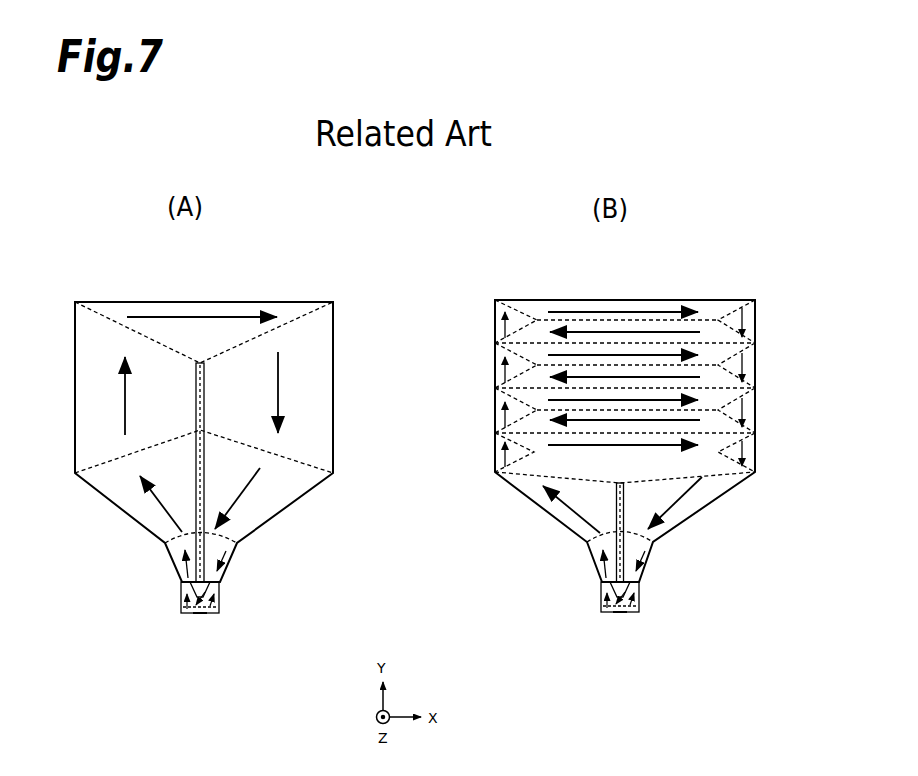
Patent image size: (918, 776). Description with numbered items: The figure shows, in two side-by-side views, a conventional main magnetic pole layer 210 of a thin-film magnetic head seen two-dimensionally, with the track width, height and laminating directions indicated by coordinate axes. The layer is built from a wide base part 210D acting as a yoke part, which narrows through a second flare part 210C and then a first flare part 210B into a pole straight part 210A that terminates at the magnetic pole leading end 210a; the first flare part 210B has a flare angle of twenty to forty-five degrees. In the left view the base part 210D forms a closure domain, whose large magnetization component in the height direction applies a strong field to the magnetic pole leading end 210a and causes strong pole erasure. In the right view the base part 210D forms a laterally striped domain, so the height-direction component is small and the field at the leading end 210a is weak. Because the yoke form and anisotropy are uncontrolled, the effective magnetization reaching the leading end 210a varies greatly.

The main magnetic pole layer 210 is at (242, 288).
The base part 210D is at (318, 343).
The second flare part 210C is at (280, 513).
The first flare part 210B is at (213, 568).
The pole straight part 210A is at (219, 603).
The magnetic pole leading end 210a is at (195, 616).